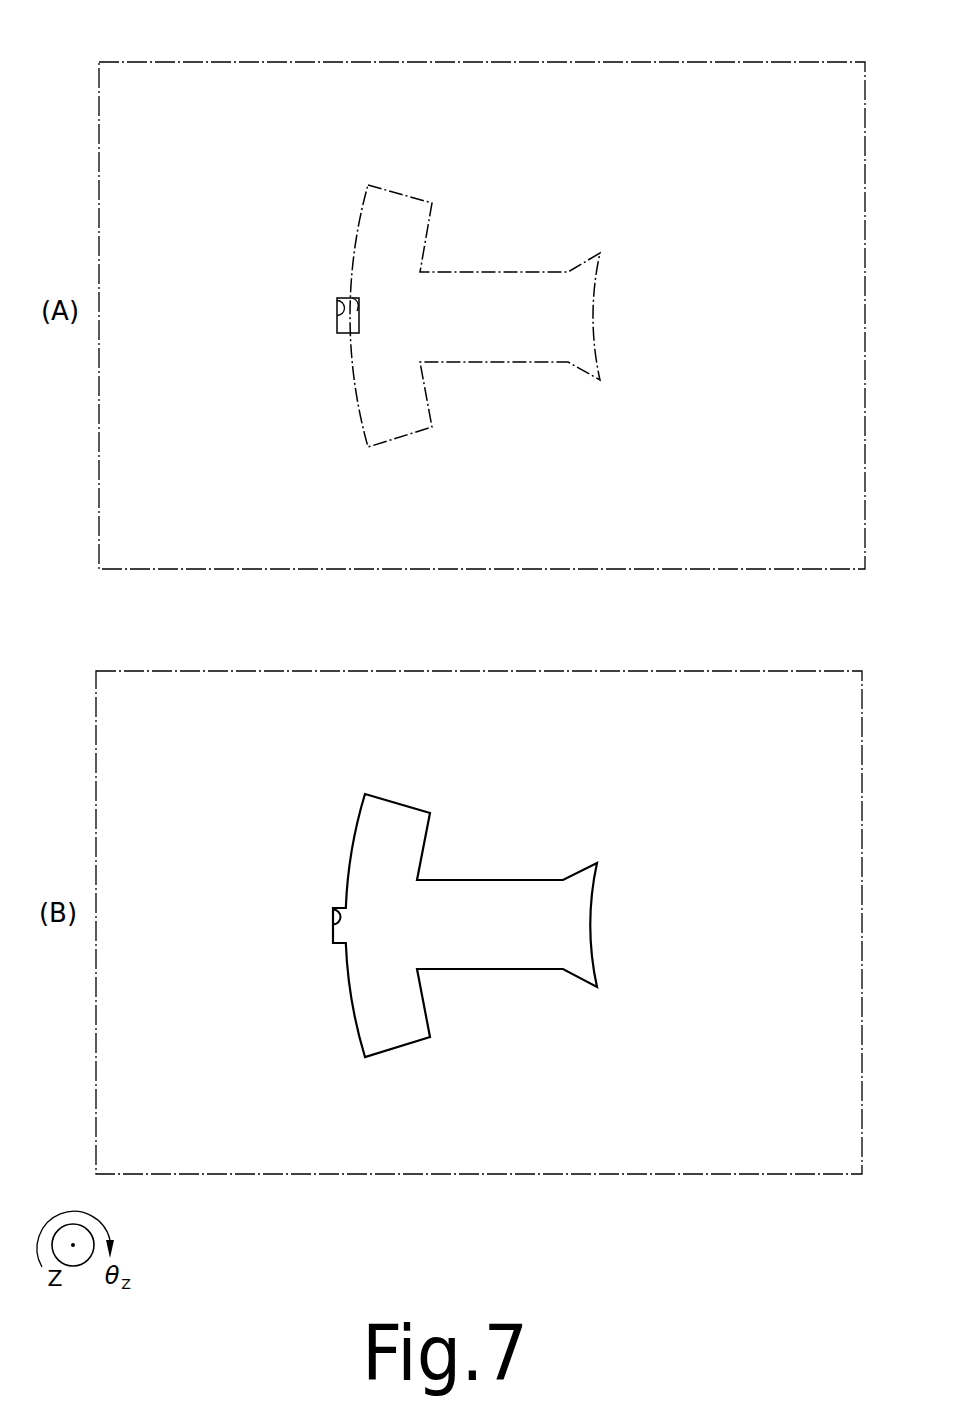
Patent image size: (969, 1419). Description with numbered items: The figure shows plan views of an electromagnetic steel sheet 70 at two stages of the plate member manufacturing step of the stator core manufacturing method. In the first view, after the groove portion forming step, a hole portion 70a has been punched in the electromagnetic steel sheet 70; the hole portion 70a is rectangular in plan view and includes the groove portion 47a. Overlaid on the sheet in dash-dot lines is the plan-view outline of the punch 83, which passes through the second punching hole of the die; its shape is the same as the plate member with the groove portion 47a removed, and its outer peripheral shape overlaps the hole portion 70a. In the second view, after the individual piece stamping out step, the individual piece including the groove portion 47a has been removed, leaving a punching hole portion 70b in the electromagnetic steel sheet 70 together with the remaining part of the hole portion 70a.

The electromagnetic steel sheet 70 is at (638, 88).
The hole portion 70a is at (337, 298).
The groove portion 47a is at (352, 298).
The punch 83 is at (495, 272).
The punching hole portion 70b is at (478, 887).